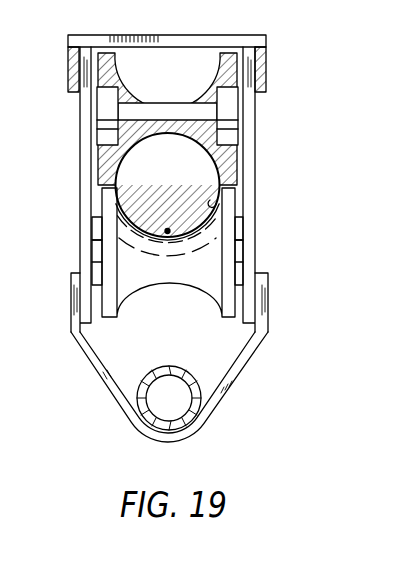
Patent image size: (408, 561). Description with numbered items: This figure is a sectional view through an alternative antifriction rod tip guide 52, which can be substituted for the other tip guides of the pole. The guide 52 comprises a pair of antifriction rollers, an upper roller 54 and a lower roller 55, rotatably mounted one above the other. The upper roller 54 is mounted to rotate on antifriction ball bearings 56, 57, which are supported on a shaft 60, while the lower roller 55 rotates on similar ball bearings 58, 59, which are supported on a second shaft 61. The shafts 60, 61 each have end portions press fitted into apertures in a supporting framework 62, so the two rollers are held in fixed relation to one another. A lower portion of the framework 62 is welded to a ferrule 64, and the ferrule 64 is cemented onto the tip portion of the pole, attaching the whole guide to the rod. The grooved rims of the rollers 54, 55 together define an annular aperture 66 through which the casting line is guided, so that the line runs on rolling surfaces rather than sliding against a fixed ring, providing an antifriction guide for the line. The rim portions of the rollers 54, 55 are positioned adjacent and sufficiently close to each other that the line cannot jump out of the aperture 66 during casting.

The rod tip guide 52 is at (305, 60).
The upper roller 54 is at (102, 160).
The lower roller 55 is at (102, 198).
The ball bearing 56 is at (101, 130).
The ball bearing 57 is at (236, 130).
The ball bearing 58 is at (81, 229).
The ball bearing 59 is at (240, 232).
The shaft 60 is at (161, 101).
The shaft 61 is at (243, 250).
The supporting framework 62 is at (246, 384).
The ferrule 64 is at (189, 374).
The annular aperture 66 is at (213, 203).